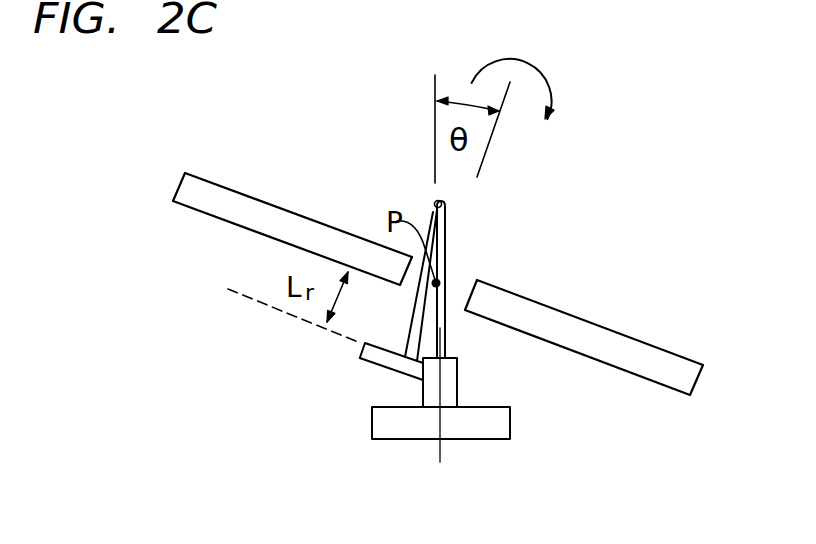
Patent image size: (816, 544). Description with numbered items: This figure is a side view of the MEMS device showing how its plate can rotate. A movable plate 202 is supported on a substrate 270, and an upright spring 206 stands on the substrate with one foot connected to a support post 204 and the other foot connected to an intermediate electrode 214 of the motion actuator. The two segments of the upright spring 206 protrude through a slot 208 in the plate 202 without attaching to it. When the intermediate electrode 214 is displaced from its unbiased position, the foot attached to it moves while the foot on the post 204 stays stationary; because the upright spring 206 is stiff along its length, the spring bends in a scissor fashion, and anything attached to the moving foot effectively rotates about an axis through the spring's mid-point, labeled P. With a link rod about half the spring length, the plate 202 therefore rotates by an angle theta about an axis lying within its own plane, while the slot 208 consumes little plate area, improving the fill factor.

The movable plate 202 is at (670, 364).
The support post 204 is at (450, 383).
The upright spring 206 is at (443, 203).
The slot 208 is at (463, 275).
The intermediate electrode 214 is at (365, 357).
The substrate 270 is at (500, 425).